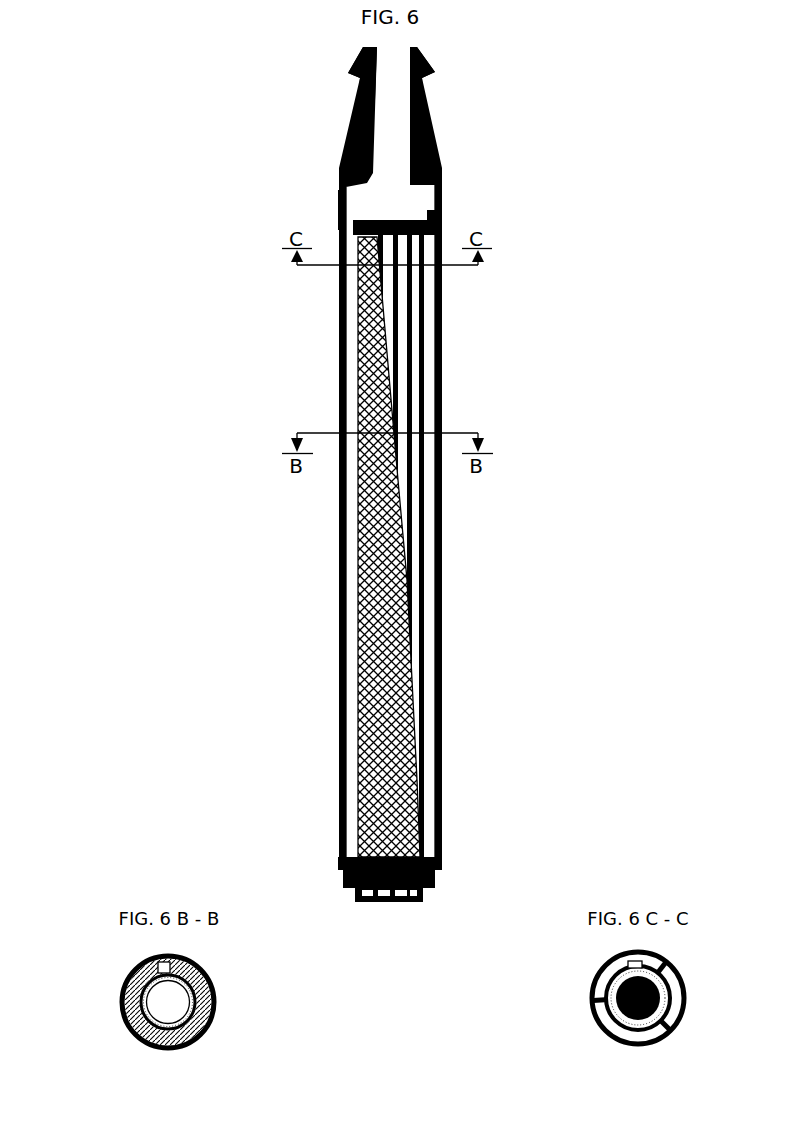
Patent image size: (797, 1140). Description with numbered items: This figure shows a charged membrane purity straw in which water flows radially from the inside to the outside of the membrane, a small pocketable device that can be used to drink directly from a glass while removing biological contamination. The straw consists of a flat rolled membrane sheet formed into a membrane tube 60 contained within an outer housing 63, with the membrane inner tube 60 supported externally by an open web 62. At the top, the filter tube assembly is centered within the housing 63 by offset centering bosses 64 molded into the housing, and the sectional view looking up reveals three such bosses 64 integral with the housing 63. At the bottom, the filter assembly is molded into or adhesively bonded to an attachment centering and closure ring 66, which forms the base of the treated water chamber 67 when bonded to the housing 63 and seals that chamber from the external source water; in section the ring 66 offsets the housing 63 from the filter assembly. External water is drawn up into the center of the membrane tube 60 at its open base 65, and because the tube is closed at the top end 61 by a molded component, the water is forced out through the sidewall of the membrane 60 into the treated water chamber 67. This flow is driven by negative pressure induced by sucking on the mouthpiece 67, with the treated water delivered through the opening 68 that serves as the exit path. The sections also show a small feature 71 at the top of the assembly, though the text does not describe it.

In FIG. 6, the membrane tube 60 is at (405, 362).
In FIG. 6 B-B, the membrane tube 60 is at (218, 988).
In FIG. 6 C-C, the membrane tube 60 is at (668, 990).
In FIG. 6, the top end 61 is at (405, 222).
In FIG. 6, the open web 62 is at (367, 422).
In FIG. 6 B-B, the open web 62 is at (175, 1005).
In FIG. 6 C-C, the open web 62 is at (667, 1008).
In FIG. 6, the outer housing 63 is at (337, 520).
In FIG. 6 B-B, the outer housing 63 is at (118, 1002).
In FIG. 6 C-C, the outer housing 63 is at (623, 1048).
In FIG. 6, the offset centering bosses 64 is at (335, 215).
In FIG. 6 C-C, the offset centering bosses 64 is at (602, 992).
In FIG. 6, the open base 65 is at (392, 902).
In FIG. 6 B-B, the open base 65 is at (205, 1038).
In FIG. 6, the attachment centering and closure ring 66 is at (340, 315).
In FIG. 6 B-B, the attachment centering and closure ring 66 is at (138, 1052).
In FIG. 6, the treated water chamber 67 is at (352, 712).
In FIG. 6 B-B, the treated water chamber 67 is at (118, 1027).
In FIG. 6 C-C, the treated water chamber 67 is at (592, 1018).
In FIG. 6, the opening 68 is at (392, 183).
In FIG. 6 C-C, the opening 68 is at (672, 1035).
In FIG. 6 B-B, the key slot 71 is at (135, 963).
In FIG. 6 C-C, the key slot 71 is at (630, 963).